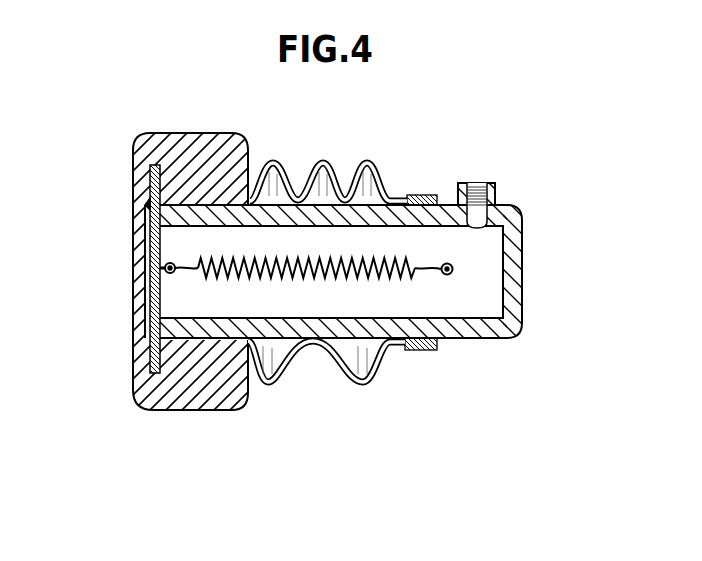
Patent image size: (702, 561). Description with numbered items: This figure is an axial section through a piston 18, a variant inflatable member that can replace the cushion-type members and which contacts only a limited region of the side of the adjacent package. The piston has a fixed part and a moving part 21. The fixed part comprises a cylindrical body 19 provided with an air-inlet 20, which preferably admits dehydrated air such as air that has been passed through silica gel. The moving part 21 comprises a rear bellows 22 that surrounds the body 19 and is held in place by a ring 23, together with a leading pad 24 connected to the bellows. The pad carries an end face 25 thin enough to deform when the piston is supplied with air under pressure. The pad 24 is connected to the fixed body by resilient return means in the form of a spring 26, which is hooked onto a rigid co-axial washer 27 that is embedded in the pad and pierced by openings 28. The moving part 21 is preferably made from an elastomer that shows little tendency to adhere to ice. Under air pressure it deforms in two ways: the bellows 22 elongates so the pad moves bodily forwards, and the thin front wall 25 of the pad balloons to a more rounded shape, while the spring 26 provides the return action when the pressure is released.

The piston 18 is at (476, 339).
The cylindrical body 19 is at (510, 275).
The air-inlet 20 is at (473, 183).
The moving part 21 is at (201, 411).
The rear bellows 22 is at (331, 383).
The ring 23 is at (428, 352).
The leading pad 24 is at (178, 388).
The end face 25 is at (148, 286).
The spring 26 is at (378, 262).
The spring anchor 27 is at (150, 268).
The openings 28 is at (148, 214).